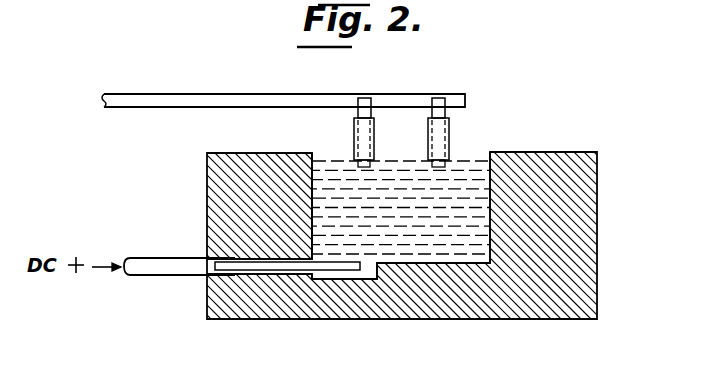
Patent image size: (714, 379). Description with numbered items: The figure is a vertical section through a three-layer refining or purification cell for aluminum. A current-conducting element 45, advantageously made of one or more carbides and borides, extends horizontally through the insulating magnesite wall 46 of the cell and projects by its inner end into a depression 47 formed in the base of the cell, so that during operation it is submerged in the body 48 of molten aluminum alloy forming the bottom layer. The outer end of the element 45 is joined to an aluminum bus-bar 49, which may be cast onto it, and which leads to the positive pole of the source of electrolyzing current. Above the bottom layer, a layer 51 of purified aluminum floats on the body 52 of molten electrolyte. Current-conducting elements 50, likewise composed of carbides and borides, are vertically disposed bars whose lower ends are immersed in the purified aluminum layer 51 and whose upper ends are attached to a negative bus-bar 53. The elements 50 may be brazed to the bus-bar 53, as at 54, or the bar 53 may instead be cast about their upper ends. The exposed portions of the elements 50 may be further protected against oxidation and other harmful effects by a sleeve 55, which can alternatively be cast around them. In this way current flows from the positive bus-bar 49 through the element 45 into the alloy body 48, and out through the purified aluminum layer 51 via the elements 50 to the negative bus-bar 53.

The current-conducting element 45 is at (266, 272).
The insulating wall 46 is at (596, 285).
The depression 47 is at (363, 280).
The body of molten aluminum alloy 48 is at (485, 247).
The aluminum bus-bar 49 is at (173, 258).
The current-conducting elements 50 is at (428, 139).
The layer of purified aluminum 51 is at (488, 154).
The body of molten electrolyte 52 is at (490, 203).
The negative bus-bar 53 is at (158, 100).
The brazed connection 54 is at (364, 98).
The sleeve 55 is at (354, 142).